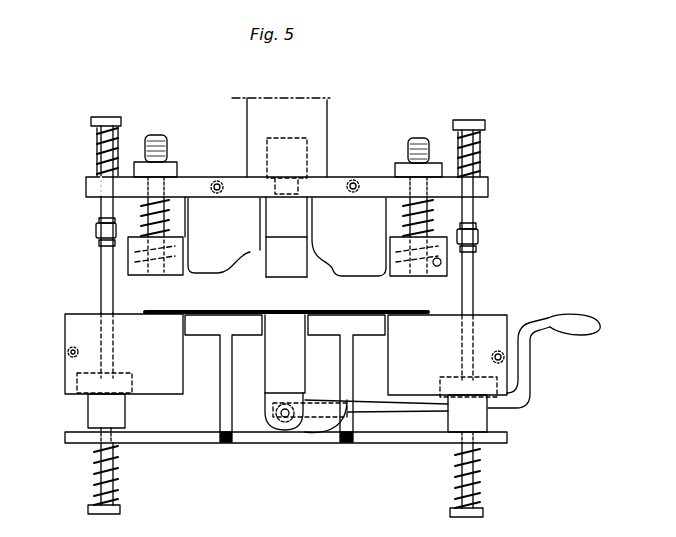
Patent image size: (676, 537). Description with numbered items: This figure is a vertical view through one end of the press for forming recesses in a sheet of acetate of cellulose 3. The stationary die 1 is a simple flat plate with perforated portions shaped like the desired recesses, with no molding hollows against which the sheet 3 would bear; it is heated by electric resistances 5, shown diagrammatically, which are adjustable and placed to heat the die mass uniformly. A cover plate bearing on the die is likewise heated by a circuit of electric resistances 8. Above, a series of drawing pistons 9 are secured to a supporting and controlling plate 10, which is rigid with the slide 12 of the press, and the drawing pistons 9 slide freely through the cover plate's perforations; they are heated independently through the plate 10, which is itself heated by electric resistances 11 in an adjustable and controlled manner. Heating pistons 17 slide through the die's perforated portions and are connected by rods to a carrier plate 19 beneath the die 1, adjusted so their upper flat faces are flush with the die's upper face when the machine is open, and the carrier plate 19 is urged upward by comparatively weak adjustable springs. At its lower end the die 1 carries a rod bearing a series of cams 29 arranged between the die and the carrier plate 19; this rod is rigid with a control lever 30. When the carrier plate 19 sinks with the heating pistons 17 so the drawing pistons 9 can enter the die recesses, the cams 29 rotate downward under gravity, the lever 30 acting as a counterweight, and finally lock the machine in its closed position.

The stationary die 1 is at (496, 328).
The sheet of acetate of cellulose 3 is at (409, 313).
The electric resistances 5 is at (503, 353).
The electric resistances 8 is at (447, 262).
The drawing pistons 9 is at (220, 261).
The supporting and controlling plate 10 is at (190, 185).
The electric resistances 11 is at (354, 181).
The slide of the press 12 is at (314, 121).
The heating pistons 17 is at (240, 326).
The carrier plate 19 is at (177, 438).
The cams 29 is at (300, 430).
The control lever 30 is at (393, 408).